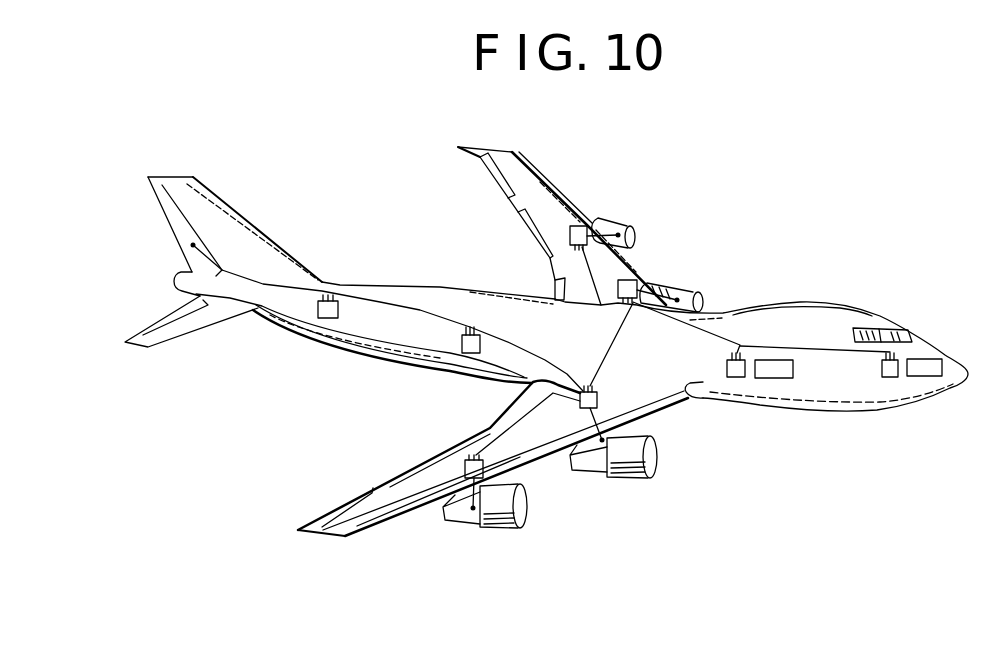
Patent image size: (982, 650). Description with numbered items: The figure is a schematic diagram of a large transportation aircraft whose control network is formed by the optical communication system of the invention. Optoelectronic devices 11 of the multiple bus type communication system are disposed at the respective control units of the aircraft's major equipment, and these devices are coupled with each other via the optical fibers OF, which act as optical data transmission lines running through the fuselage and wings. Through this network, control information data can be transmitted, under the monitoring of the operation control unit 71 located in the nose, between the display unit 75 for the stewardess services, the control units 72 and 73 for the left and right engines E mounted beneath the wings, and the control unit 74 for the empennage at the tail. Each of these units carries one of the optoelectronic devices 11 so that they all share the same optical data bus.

The optoelectronic device 11 is at (323, 318).
The optical fiber OF is at (412, 310).
The engine E is at (635, 235).
The operation control unit 71 is at (935, 359).
The control unit for left engine 72 is at (612, 220).
The control unit for right engine 73 is at (453, 519).
The control unit for empennage 74 is at (182, 236).
The display unit 75 is at (775, 378).